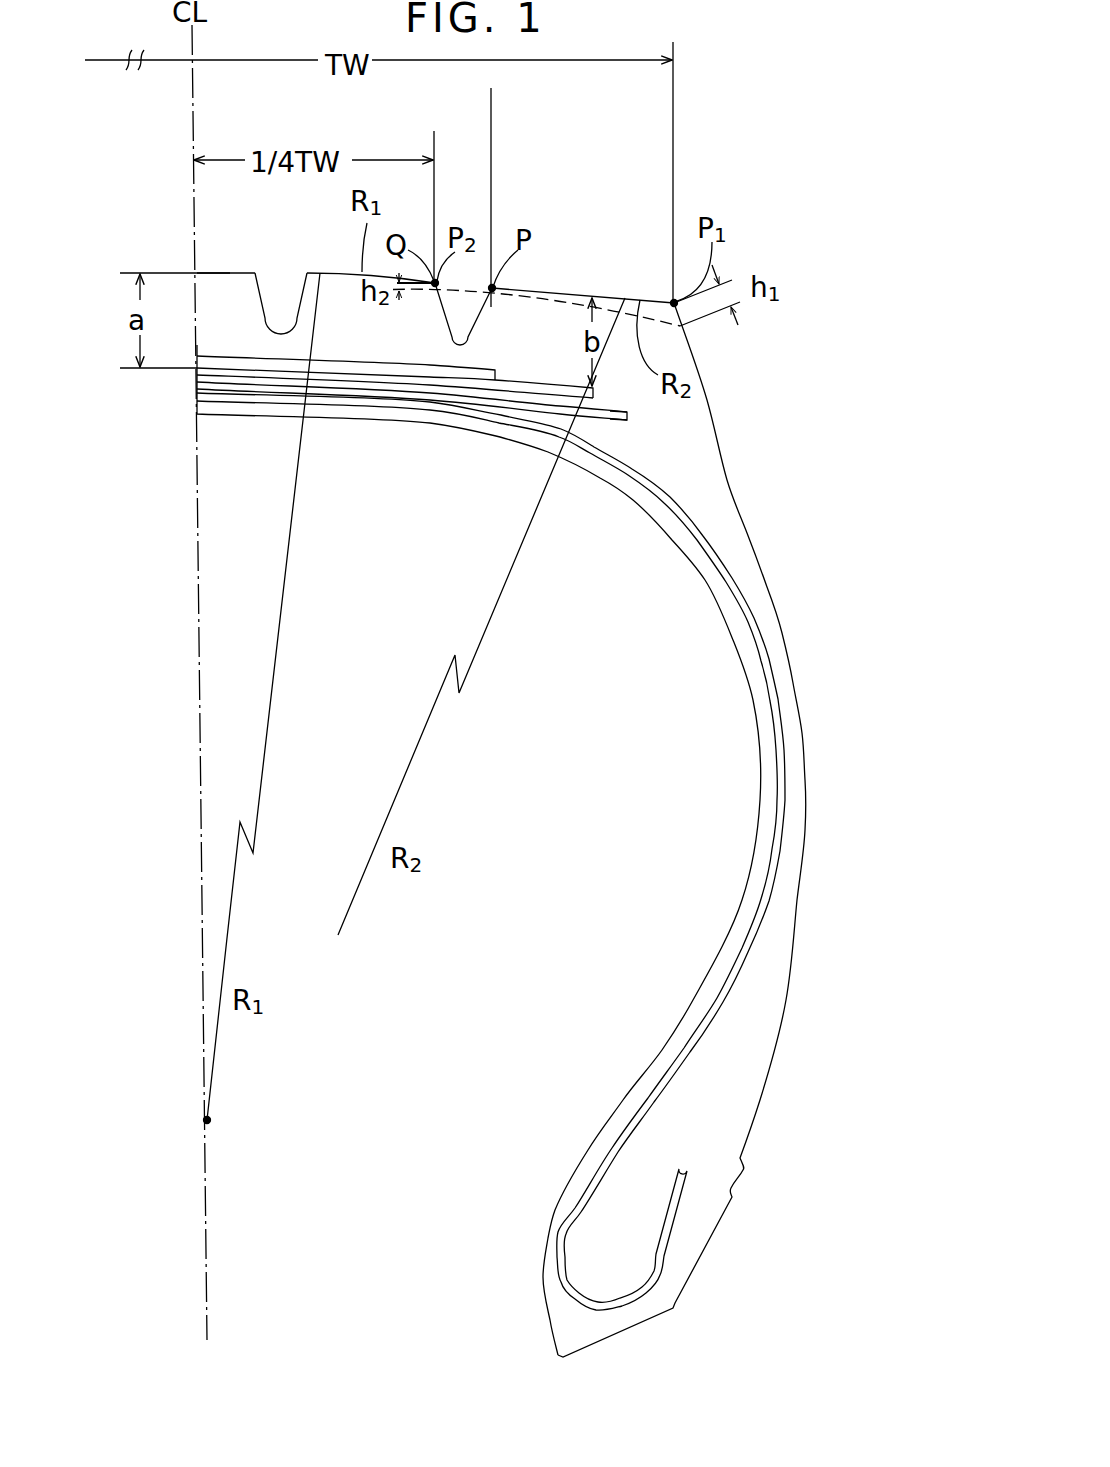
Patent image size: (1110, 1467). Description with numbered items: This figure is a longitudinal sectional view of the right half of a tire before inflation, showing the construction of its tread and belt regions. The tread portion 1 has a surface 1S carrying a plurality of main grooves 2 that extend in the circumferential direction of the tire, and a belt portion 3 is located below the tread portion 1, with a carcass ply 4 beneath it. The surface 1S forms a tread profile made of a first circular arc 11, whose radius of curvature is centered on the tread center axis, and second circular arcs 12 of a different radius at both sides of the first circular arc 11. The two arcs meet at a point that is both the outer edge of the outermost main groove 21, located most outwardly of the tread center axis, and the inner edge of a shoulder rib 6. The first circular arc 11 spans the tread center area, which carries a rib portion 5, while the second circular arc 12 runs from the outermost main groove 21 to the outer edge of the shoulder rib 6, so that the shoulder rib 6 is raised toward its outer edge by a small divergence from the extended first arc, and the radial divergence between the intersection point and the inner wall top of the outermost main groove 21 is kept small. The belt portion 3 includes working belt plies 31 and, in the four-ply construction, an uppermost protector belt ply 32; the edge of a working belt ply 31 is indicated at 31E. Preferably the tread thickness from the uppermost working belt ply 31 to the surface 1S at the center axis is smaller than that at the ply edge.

The tread portion 1 is at (237, 266).
The tread surface 1S is at (217, 272).
The main groove 2 is at (283, 312).
The outermost main groove 21 is at (450, 335).
The belt portion 3 is at (640, 408).
The working belt ply 31 is at (530, 382).
The edge of inner belt ply 31E is at (608, 408).
The protector belt ply 32 is at (472, 365).
The carcass ply 4 is at (764, 629).
The rib portion 5 is at (332, 272).
The shoulder rib 6 is at (597, 293).
The first circular arc 11 is at (85, 108).
The second circular arc 12 is at (672, 128).